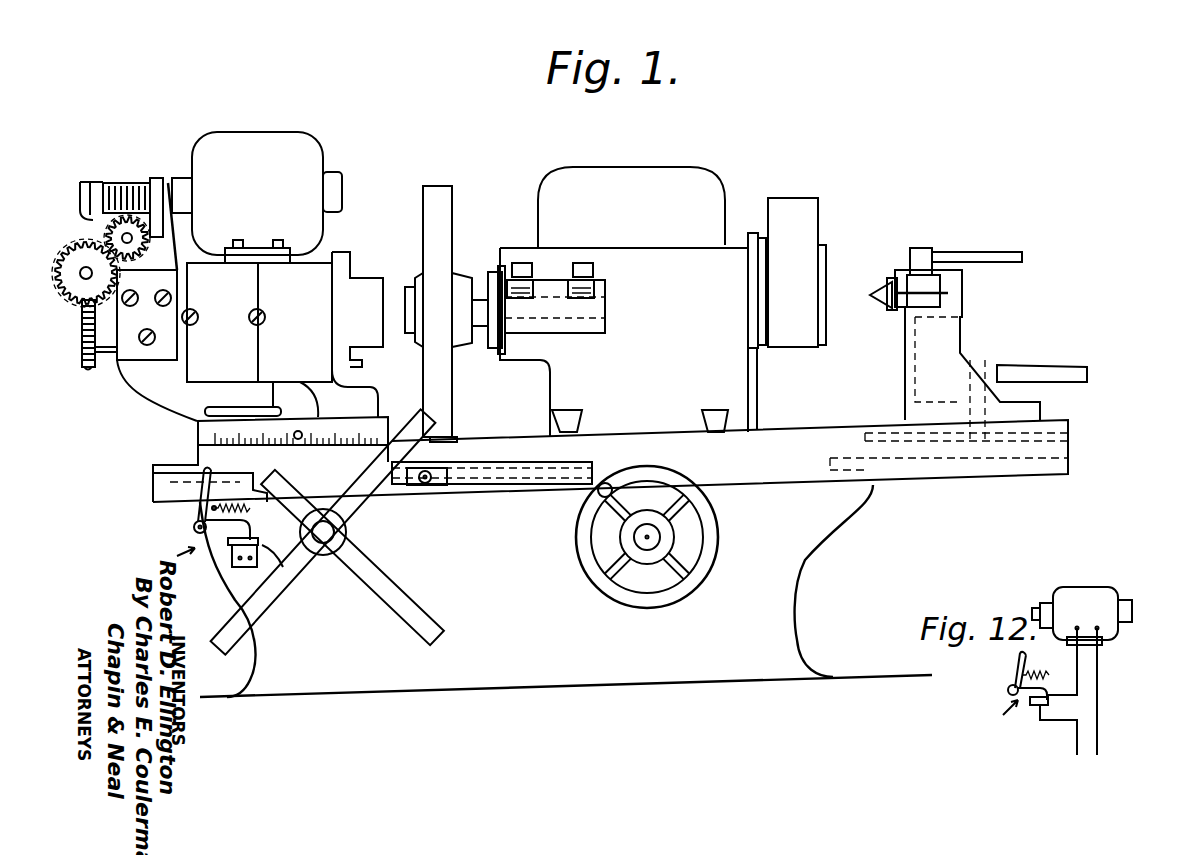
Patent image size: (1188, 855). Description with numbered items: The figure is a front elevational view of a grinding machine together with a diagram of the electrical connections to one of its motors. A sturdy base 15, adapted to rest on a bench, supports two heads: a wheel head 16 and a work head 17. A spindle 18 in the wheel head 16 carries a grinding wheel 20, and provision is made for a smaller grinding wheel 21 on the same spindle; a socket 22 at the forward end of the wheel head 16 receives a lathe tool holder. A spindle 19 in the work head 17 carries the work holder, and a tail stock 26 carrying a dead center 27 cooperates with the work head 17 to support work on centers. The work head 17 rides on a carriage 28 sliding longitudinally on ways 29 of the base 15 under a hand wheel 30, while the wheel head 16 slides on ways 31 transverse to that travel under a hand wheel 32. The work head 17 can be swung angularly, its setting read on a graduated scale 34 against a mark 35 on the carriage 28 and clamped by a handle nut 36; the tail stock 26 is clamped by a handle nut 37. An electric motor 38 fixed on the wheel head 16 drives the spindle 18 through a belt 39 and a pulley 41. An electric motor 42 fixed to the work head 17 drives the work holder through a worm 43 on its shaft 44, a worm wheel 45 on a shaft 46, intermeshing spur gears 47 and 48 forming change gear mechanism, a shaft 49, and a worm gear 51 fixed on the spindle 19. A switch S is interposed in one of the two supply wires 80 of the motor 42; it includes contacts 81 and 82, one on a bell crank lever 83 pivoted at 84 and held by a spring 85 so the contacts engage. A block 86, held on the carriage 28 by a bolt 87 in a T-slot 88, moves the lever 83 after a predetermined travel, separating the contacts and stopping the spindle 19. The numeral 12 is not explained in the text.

In FIG. 1, the gear plate 12 is at (145, 283).
In FIG. 1, the base 15 is at (540, 665).
In FIG. 1, the wheel head 16 is at (628, 342).
In FIG. 1, the work head 17 is at (272, 340).
In FIG. 1, the spindle 18 is at (477, 298).
In FIG. 1, the spindle 19 is at (365, 293).
In FIG. 1, the grinding wheel 20 is at (432, 193).
In FIG. 1, the smaller grinding wheel 21 is at (582, 262).
In FIG. 1, the socket 22 is at (591, 338).
In FIG. 1, the tail stock 26 is at (967, 344).
In FIG. 1, the dead center 27 is at (888, 297).
In FIG. 1, the carriage 28 is at (610, 461).
In FIG. 1, the ways 29 is at (866, 490).
In FIG. 1, the hand wheel 30 is at (395, 598).
In FIG. 1, the ways 31 is at (564, 422).
In FIG. 1, the hand wheel 32 is at (711, 569).
In FIG. 1, the graduated scale 34 is at (200, 438).
In FIG. 1, the mark 35 is at (298, 439).
In FIG. 1, the handle nut 36 is at (280, 406).
In FIG. 1, the handle nut 37 is at (987, 367).
In FIG. 1, the electric motor 38 is at (620, 183).
In FIG. 1, the belt 39 is at (783, 210).
In FIG. 1, the pulley 41 is at (834, 312).
In FIG. 1, the electric motor 42 is at (207, 153).
In FIG. 12, the electric motor 42 is at (1100, 593).
In FIG. 1, the worm 43 is at (128, 183).
In FIG. 1, the shaft 44 is at (170, 178).
In FIG. 1, the worm wheel 45 is at (103, 220).
In FIG. 1, the shaft 46 is at (135, 237).
In FIG. 1, the spur gear 47 is at (140, 246).
In FIG. 1, the spur gear 48 is at (82, 312).
In FIG. 1, the shaft 49 is at (76, 296).
In FIG. 1, the worm gear 51 is at (88, 368).
In FIG. 12, the supply wires 80 is at (1080, 733).
In FIG. 1, the contact 81 is at (281, 568).
In FIG. 1, the contact 82 is at (256, 542).
In FIG. 1, the bell crank lever 83 is at (193, 513).
In FIG. 1, the pivot 84 is at (196, 531).
In FIG. 1, the spring 85 is at (230, 497).
In FIG. 1, the block 86 is at (423, 487).
In FIG. 1, the bolt 87 is at (443, 447).
In FIG. 1, the T-slot 88 is at (572, 470).
In FIG. 1, the switch S is at (179, 560).
In FIG. 12, the switch S is at (1013, 699).